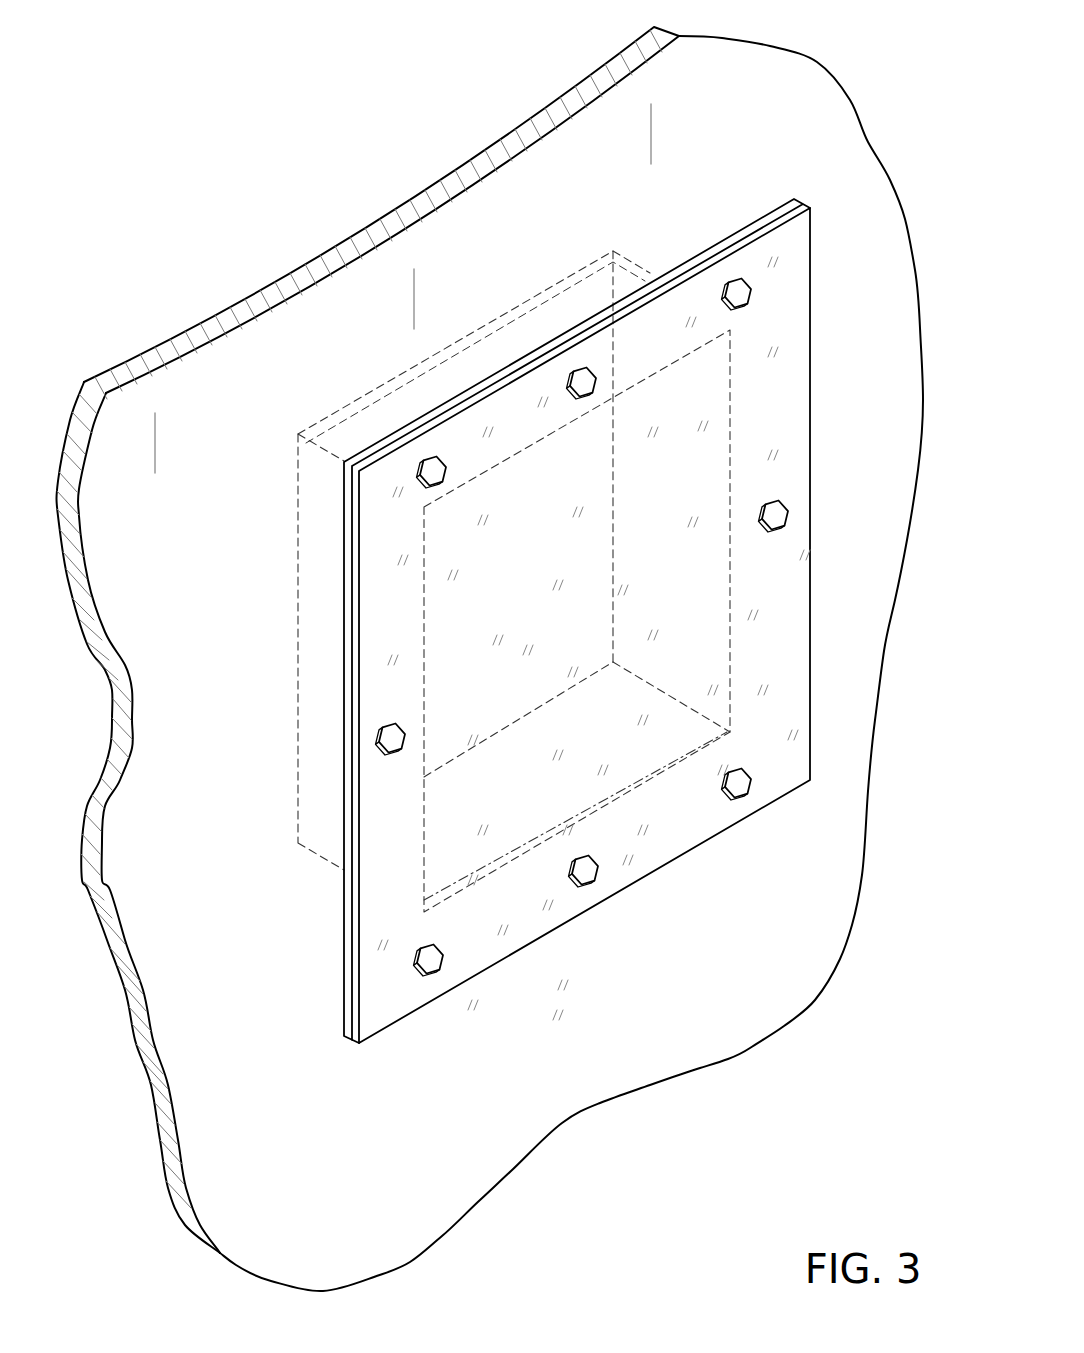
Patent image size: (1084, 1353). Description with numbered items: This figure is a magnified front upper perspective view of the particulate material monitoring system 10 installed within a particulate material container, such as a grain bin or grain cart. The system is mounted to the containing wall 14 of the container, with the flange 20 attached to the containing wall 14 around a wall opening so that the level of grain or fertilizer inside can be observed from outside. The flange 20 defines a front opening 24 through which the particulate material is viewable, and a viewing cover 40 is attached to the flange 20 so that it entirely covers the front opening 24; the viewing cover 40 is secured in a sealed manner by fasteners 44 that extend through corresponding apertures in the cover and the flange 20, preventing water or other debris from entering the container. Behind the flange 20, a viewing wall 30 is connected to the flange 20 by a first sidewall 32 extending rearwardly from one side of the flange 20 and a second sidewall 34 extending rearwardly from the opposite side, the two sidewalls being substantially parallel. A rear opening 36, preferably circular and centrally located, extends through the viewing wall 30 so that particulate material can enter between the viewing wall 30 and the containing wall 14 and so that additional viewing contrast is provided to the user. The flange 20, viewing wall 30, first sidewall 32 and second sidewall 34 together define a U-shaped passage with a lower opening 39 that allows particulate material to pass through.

The particulate material monitoring system 10 is at (324, 127).
The containing wall 14 is at (766, 106).
The flange 20 is at (341, 911).
The front opening 24 is at (630, 792).
The viewing wall 30 is at (331, 418).
The first sidewall 32 is at (650, 266).
The second sidewall 34 is at (298, 616).
The rear opening 36 is at (485, 600).
The lower opening 39 is at (725, 737).
The viewing cover 40 is at (374, 1012).
The fasteners 44 is at (437, 967).